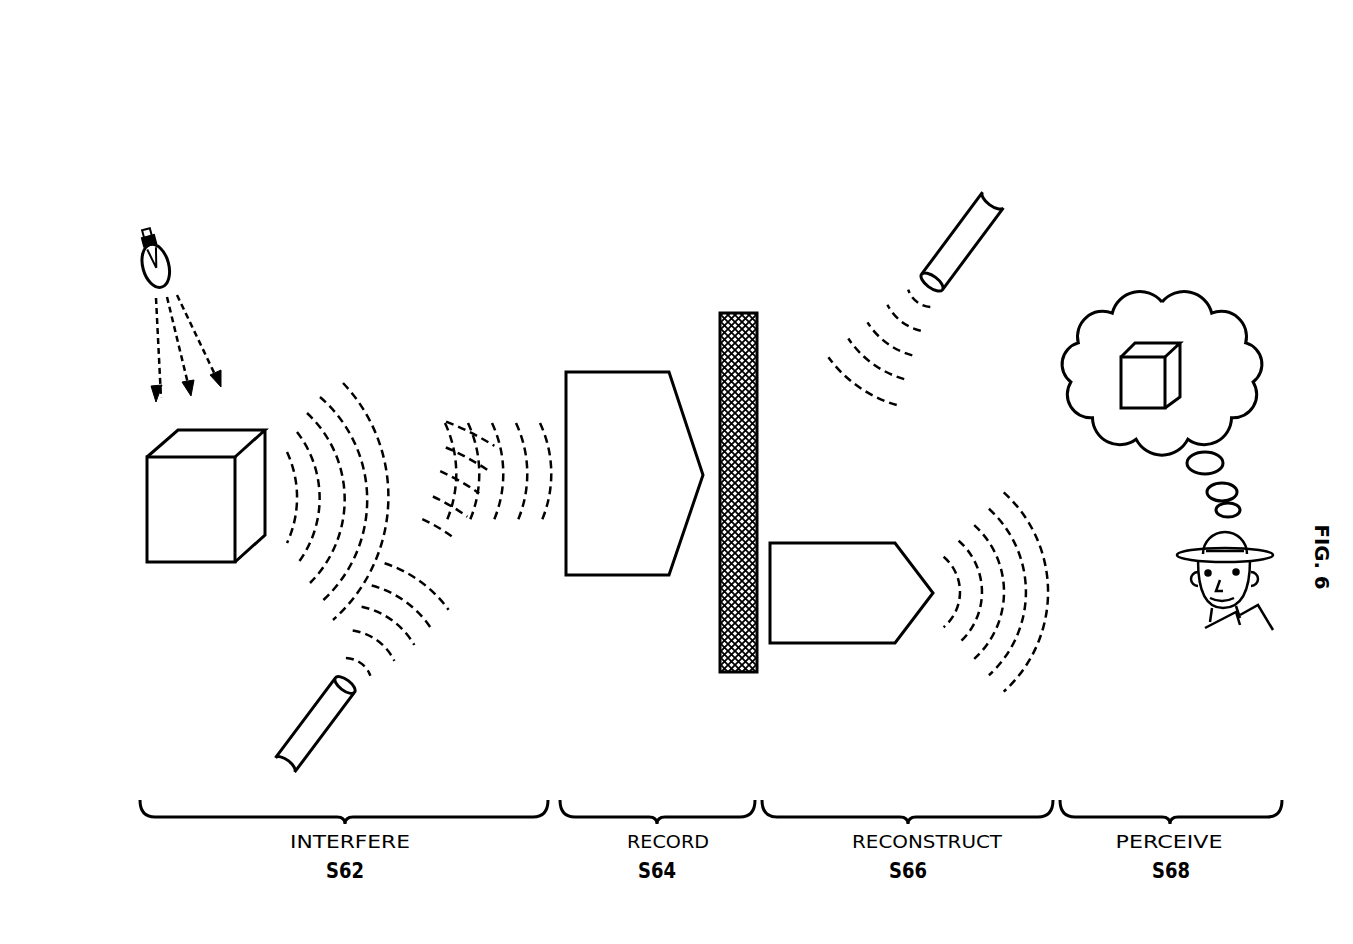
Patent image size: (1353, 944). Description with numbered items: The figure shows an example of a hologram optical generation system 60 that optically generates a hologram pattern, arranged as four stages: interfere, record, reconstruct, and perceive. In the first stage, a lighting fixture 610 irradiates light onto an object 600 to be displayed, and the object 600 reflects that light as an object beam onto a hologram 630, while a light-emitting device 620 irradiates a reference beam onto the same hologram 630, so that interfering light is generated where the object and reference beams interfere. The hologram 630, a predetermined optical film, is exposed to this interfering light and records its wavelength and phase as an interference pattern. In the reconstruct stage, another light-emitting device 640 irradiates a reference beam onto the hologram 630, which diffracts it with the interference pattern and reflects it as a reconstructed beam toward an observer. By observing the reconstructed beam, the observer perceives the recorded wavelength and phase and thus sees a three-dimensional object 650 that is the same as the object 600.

The hologram optical generation system 60 is at (1192, 168).
The object 600 is at (190, 563).
The lighting fixture 610 is at (173, 256).
The light-emitting device 620 is at (282, 741).
The hologram 630 is at (733, 312).
The light-emitting device 640 is at (950, 226).
The 3D object 650 is at (1181, 368).